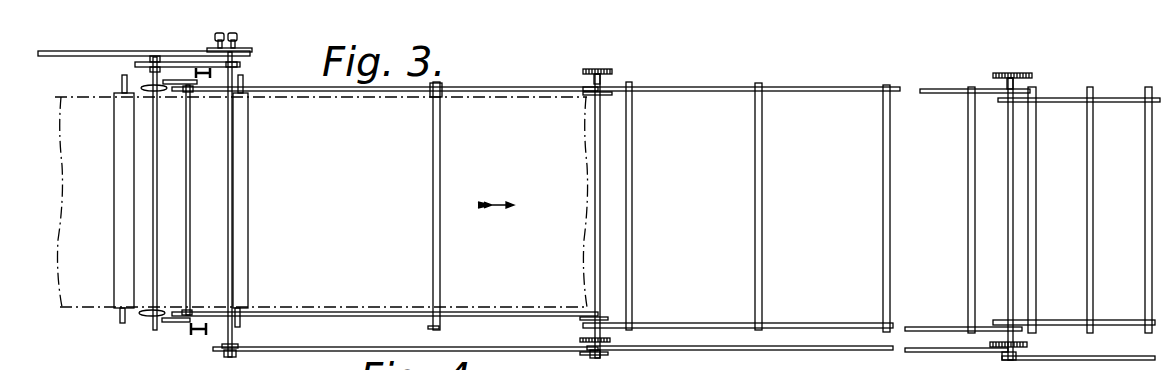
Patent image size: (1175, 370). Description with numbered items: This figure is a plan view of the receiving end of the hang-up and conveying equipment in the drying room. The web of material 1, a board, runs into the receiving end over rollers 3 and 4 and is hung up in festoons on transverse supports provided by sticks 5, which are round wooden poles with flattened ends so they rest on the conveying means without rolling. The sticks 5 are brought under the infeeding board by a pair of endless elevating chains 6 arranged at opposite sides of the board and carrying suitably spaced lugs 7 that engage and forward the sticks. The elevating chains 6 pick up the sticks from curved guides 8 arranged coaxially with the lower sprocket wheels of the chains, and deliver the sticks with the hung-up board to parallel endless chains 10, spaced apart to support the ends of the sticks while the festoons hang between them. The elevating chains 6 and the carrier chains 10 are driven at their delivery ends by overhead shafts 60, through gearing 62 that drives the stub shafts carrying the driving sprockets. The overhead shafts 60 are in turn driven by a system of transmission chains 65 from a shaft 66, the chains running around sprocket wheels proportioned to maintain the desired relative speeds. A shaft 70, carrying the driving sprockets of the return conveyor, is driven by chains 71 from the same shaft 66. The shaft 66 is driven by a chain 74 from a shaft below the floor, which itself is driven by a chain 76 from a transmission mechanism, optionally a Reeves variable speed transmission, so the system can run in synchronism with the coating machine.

The web of material 1 is at (60, 152).
The roller 3 is at (120, 222).
The roller 4 is at (243, 205).
The stick 5 is at (433, 212).
The elevating chain 6 is at (520, 90).
The lug 7 is at (432, 318).
The curved guide 8 is at (175, 80).
The endless chain 10 is at (718, 90).
The overhead shaft 60 is at (600, 218).
The gearing 62 is at (600, 69).
The transmission chain 65 is at (388, 350).
The shaft 66 is at (232, 255).
The shaft 70 is at (150, 322).
The chain 71 is at (140, 61).
The chain 74 is at (252, 50).
The chain 76 is at (88, 54).